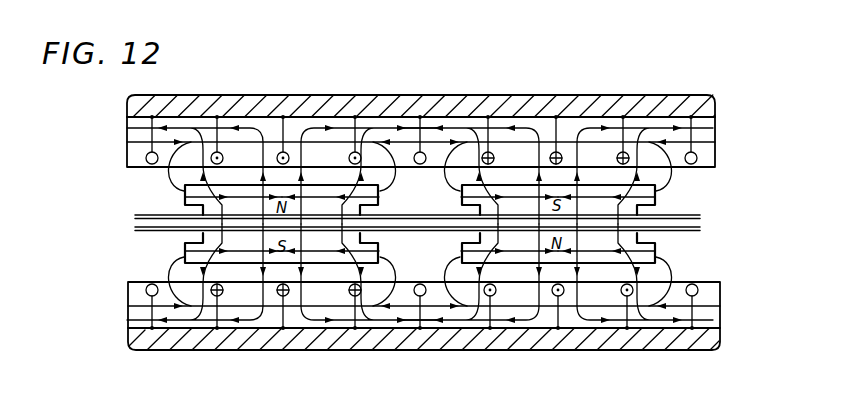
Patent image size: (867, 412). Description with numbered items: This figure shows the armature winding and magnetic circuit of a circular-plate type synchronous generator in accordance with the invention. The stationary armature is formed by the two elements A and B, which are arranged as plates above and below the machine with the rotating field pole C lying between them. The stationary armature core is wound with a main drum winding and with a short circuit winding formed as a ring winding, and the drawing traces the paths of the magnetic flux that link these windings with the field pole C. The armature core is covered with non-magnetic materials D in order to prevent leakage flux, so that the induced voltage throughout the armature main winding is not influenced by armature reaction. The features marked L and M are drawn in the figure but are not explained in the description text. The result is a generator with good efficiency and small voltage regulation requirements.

The stationary armature A is at (716, 138).
The stationary armature B is at (713, 292).
The rotating field pole C is at (702, 223).
The non-magnetic materials D is at (400, 103).
The lead line L is at (150, 136).
The coil end M is at (700, 167).